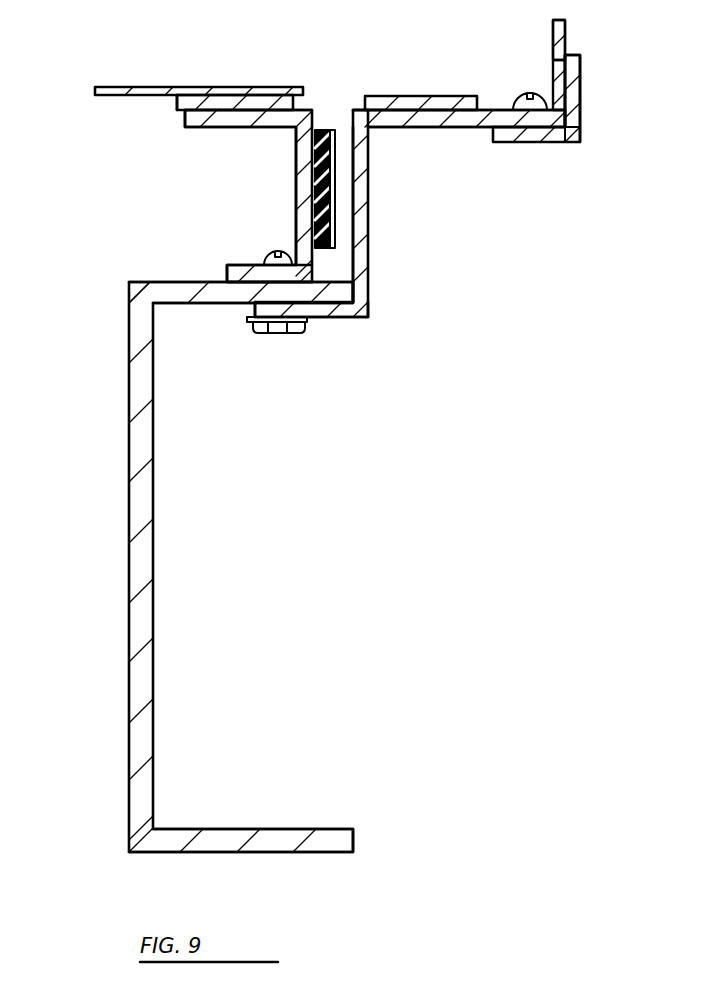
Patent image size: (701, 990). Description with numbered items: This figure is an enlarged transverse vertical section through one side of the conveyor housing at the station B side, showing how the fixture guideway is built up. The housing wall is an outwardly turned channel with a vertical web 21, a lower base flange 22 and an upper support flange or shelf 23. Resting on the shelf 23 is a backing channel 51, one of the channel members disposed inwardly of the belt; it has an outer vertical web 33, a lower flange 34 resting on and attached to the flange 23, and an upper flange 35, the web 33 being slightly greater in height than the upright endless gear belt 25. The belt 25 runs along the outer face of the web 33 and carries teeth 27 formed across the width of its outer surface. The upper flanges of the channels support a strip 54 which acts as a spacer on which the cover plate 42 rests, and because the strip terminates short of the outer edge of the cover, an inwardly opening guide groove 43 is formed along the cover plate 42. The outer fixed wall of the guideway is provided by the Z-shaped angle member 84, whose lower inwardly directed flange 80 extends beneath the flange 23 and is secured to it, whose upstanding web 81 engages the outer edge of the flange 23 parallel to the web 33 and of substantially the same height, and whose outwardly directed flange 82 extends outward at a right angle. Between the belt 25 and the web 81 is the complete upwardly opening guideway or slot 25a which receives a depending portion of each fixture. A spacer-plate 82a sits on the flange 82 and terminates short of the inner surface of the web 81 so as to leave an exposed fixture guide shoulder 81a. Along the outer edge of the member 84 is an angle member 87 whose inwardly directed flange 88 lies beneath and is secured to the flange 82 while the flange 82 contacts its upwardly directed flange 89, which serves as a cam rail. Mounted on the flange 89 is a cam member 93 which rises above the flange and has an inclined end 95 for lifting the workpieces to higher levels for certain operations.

The vertical web 21 is at (129, 512).
The lower base flange 22 is at (268, 829).
The upper support flange 23 is at (170, 295).
The endless gear belt 25 is at (318, 207).
The guideway 25a is at (344, 173).
The teeth 27 is at (333, 198).
The outer vertical web 33 is at (296, 188).
The lower flange 34 is at (238, 266).
The upper flange 35 is at (208, 118).
The cover plate 42 is at (118, 87).
The guide groove 43 is at (296, 104).
The channel 51 is at (290, 151).
The strip 54 is at (178, 104).
The lower inwardly directed flange 80 is at (327, 309).
The upstanding web 81 is at (372, 248).
The fixture guide shoulder 81a is at (352, 109).
The outwardly directed flange 82 is at (447, 128).
The spacer-plate 82a is at (440, 96).
The angle member 84 is at (378, 313).
The angle member 87 is at (580, 132).
The inwardly directed flange 88 is at (556, 143).
The upwardly directed flange 89 is at (578, 100).
The cam member 93 is at (566, 38).
The inclined end 95 is at (553, 33).